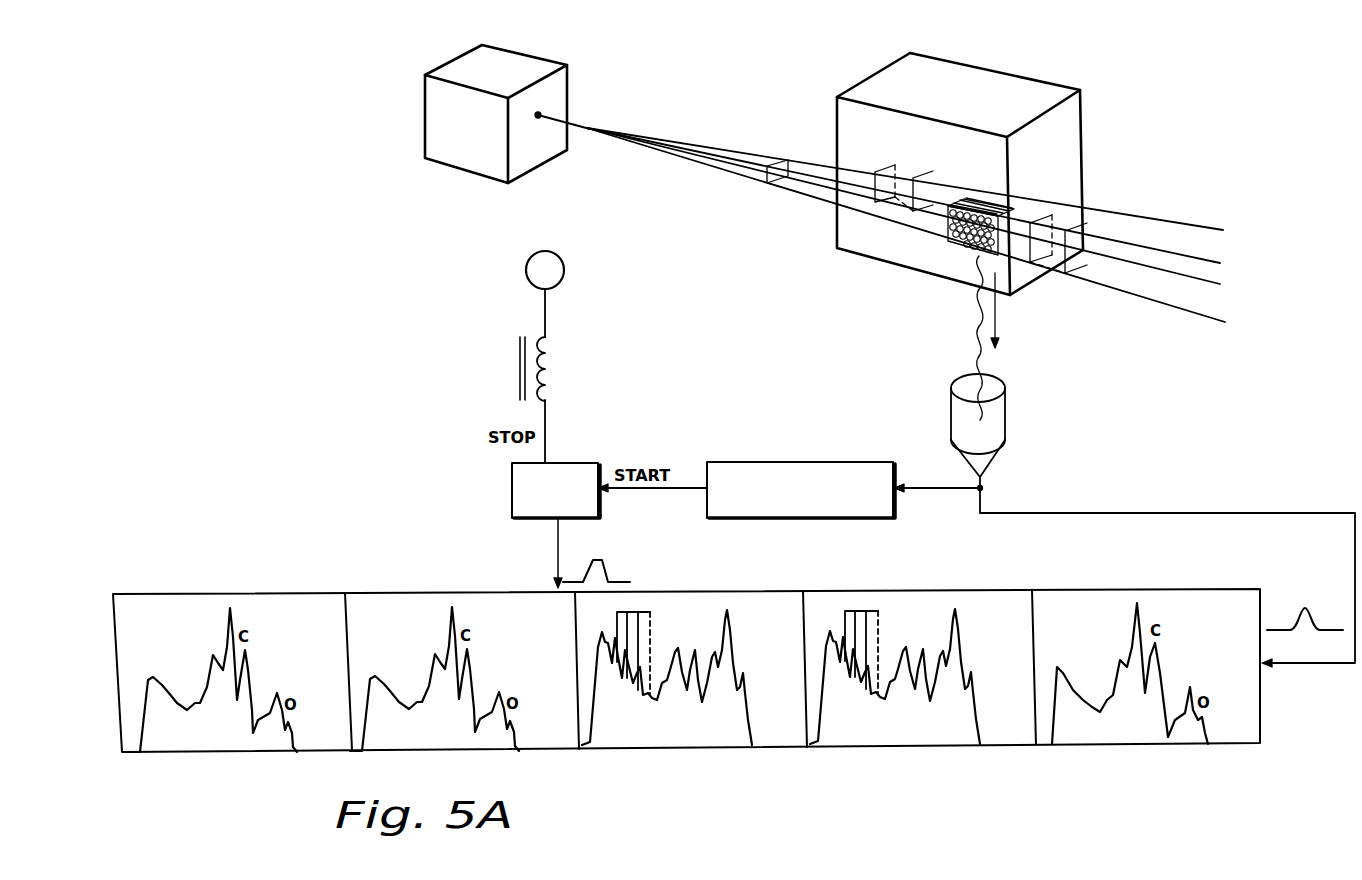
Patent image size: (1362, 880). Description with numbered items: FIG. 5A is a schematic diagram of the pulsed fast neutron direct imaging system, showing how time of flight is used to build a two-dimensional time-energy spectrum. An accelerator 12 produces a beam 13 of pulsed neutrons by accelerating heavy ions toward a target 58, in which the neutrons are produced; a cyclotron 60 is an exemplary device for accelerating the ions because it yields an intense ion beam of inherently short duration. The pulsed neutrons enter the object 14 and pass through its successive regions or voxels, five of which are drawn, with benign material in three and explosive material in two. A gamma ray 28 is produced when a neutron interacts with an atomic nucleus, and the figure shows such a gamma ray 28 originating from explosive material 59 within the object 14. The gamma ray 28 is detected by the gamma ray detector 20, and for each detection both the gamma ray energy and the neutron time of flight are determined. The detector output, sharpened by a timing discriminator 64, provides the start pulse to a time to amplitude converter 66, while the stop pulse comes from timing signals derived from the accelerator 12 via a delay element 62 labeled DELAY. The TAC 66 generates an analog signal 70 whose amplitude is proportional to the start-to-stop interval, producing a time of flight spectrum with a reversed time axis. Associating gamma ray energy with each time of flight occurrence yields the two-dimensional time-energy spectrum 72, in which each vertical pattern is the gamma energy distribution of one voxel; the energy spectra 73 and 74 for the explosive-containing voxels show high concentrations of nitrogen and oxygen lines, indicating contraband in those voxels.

The accelerator 12 is at (426, 104).
The beam 13 is at (670, 156).
The object 14 is at (1075, 160).
The gamma ray detector 20 is at (950, 406).
The gamma ray 28 is at (974, 330).
The target 58 is at (592, 122).
The explosive material 59 is at (982, 188).
The cyclotron 60 is at (563, 284).
The delay line 62 is at (519, 348).
The timing discriminator 64 is at (856, 440).
The time to amplitude converter (TAC) 66 is at (600, 466).
The analog signal 70 is at (598, 558).
The two-dimensional time-energy spectrum 72 is at (1262, 598).
The energy spectrum 73 is at (689, 748).
The energy spectrum 74 is at (919, 748).